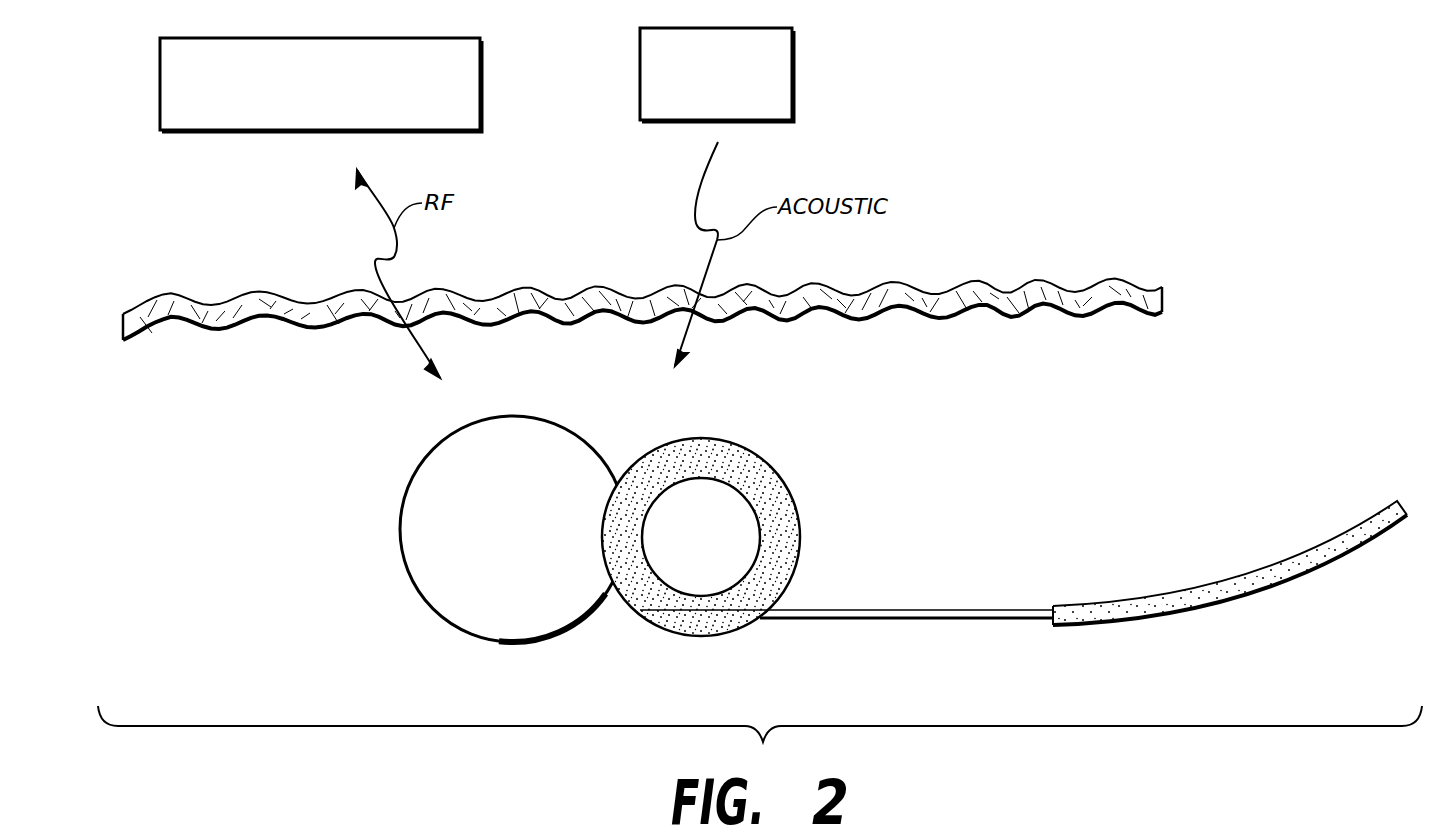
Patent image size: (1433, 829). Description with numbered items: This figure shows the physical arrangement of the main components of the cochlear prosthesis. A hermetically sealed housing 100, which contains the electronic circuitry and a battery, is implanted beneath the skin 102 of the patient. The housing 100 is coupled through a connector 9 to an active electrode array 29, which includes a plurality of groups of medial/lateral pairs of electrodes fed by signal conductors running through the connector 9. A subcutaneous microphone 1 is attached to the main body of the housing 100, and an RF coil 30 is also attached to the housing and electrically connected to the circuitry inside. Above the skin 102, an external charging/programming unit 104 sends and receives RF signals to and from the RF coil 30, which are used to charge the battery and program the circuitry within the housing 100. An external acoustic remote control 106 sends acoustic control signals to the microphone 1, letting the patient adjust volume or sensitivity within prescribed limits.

The external charging/programming unit 104 is at (483, 87).
The external acoustic remote control 106 is at (795, 68).
The skin 102 is at (1082, 316).
The RF coil 30 is at (401, 524).
The hermetically sealed housing 100 is at (707, 511).
The subcutaneous microphone 1 is at (720, 554).
The connector 9 is at (700, 637).
The active electrode array 29 is at (1262, 597).